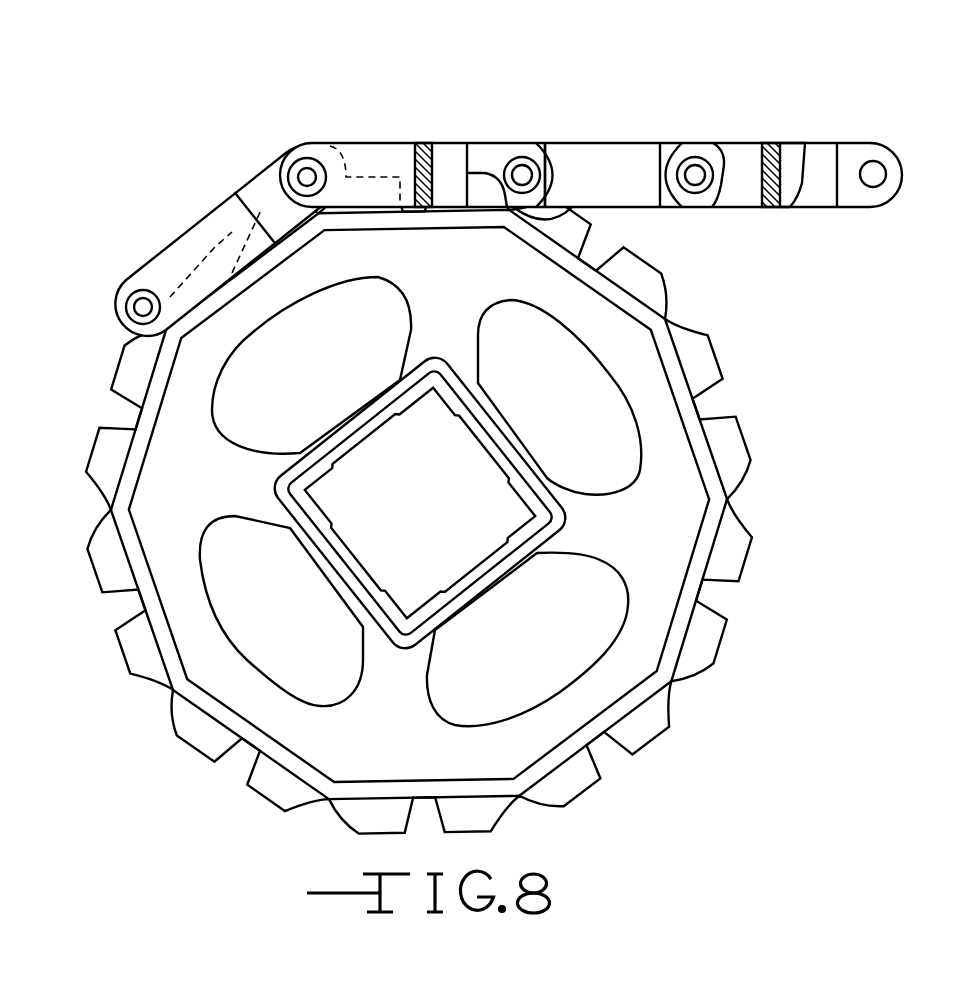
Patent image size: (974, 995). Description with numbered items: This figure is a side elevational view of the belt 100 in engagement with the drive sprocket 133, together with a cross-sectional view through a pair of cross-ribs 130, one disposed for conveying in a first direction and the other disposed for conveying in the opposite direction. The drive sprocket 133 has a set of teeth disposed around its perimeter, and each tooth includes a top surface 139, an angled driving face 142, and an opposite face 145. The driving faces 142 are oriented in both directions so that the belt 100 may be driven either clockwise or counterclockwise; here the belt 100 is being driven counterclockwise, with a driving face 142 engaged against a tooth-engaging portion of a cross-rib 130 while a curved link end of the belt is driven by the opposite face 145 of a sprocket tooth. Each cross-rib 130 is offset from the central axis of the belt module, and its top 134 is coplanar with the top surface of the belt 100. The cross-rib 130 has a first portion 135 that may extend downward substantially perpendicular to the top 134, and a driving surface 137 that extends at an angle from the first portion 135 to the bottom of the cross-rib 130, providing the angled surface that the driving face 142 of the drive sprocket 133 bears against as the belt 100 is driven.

The belt 100 is at (508, 186).
The cross-rib 130 is at (419, 145).
The drive sprocket 133 is at (658, 522).
The top of the cross-rib 134 is at (768, 142).
The first portion of the cross-rib 135 is at (762, 163).
The driving surface 137 is at (770, 178).
The top surface of tooth 139 is at (366, 172).
The angled driving face 142 is at (436, 192).
The opposite face 145 is at (573, 210).